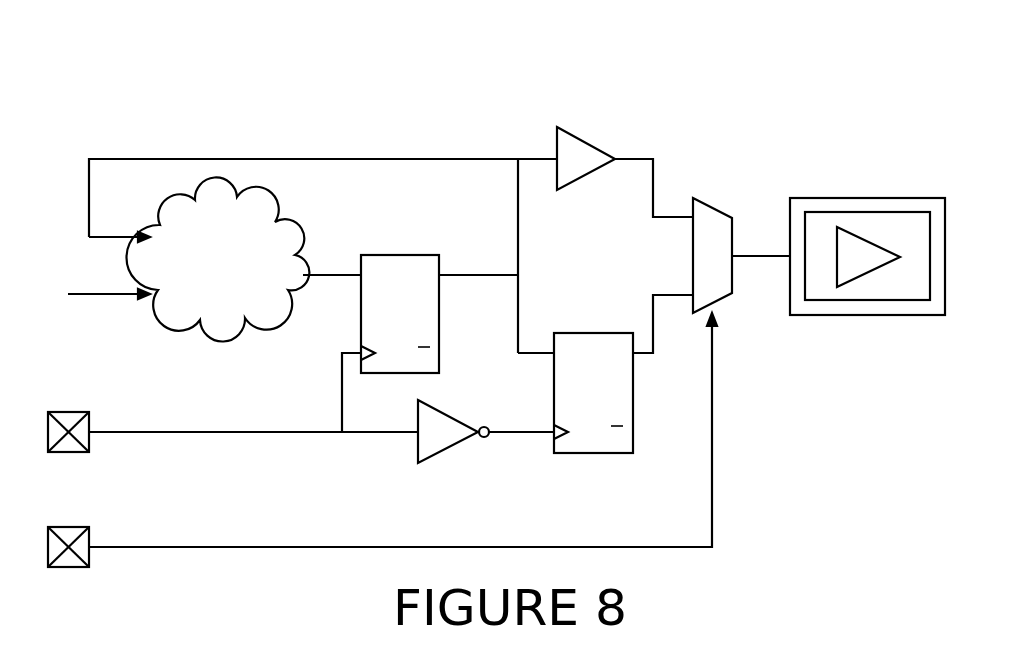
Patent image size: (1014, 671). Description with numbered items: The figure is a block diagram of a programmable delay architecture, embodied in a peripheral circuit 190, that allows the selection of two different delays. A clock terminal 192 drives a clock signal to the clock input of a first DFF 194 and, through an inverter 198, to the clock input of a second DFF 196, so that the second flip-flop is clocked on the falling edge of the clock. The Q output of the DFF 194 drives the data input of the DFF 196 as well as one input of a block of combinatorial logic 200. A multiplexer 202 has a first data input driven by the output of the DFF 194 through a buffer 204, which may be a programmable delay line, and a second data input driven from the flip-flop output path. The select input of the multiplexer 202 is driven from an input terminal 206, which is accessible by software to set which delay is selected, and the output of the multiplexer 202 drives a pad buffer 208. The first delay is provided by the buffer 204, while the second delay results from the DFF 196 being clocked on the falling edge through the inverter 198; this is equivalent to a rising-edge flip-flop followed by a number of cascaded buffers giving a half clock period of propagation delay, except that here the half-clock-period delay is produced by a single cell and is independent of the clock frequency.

The peripheral circuit 190 is at (429, 282).
The clock terminal 192 is at (99, 415).
The DFF 194 is at (403, 292).
The DFF 196 is at (593, 369).
The inverter 198 is at (457, 416).
The combinatorial logic 200 is at (242, 259).
The multiplexer 202 is at (720, 238).
The buffer 204 is at (592, 145).
The input terminal 206 is at (91, 525).
The pad buffer 208 is at (867, 233).